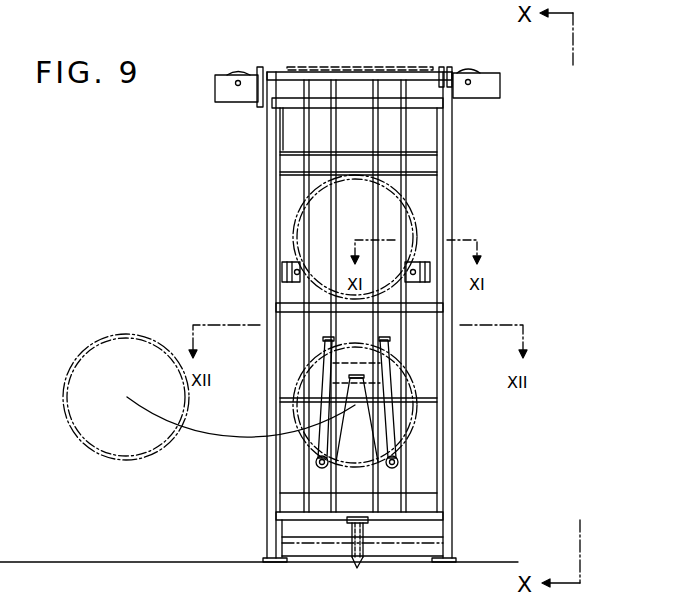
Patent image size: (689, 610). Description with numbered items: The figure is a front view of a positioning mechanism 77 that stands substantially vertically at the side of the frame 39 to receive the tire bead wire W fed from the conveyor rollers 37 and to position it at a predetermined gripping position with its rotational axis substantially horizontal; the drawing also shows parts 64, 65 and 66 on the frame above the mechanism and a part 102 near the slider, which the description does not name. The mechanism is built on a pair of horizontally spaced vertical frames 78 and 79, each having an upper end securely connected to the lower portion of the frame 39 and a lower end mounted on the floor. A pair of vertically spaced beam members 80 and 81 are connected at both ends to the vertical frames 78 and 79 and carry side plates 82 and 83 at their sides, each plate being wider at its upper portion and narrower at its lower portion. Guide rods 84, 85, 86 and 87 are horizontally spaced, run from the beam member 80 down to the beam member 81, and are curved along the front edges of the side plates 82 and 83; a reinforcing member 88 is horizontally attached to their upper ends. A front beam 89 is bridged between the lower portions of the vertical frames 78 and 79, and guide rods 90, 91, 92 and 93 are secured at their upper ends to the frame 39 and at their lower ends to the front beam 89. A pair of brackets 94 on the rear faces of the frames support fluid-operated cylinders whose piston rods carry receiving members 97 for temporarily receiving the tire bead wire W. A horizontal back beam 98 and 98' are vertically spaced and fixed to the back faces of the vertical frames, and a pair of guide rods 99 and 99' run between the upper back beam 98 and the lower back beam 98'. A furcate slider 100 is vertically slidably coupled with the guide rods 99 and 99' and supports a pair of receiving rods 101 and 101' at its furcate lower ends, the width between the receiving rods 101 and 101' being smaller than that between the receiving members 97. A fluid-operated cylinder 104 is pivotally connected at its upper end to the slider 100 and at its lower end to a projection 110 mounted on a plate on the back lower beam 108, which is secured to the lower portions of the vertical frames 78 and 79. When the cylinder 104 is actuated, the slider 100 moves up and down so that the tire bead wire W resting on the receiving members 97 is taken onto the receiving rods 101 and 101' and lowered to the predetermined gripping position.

The conveyor rollers 37 is at (470, 72).
The frame 39 is at (500, 90).
The stop plate 64 is at (440, 68).
The stop plate 65 is at (454, 72).
The stop plate 66 is at (274, 47).
The positioning mechanism 77 is at (258, 220).
The vertical frame 78 is at (444, 430).
The vertical frame 79 is at (278, 470).
The beam member 80 is at (418, 102).
The beam member 81 is at (427, 312).
The side plate 82 is at (423, 140).
The side plate 83 is at (283, 128).
The guide rod 84 is at (403, 85).
The guide rod 85 is at (376, 86).
The guide rod 86 is at (334, 82).
The guide rod 87 is at (310, 82).
The reinforcing member 88 is at (362, 77).
The front beam 89 is at (425, 517).
The guide rod 90 is at (413, 498).
The guide rod 91 is at (381, 515).
The guide rod 92 is at (333, 515).
The guide rod 93 is at (307, 492).
The bracket 94 is at (282, 272).
The receiving member 97 is at (293, 267).
The horizontal back beam 98 is at (381, 168).
The horizontal back beam 98' is at (384, 393).
The guide rod 99 is at (343, 385).
The guide rod 99' is at (409, 394).
The furcate slider 100 is at (395, 368).
The receiving rod 101 is at (333, 480).
The receiving rod 101' is at (443, 464).
The clamp jaw 102 is at (352, 397).
The fluid-operated cylinder 104 is at (407, 483).
The back lower beam 108 is at (398, 550).
The projection 110 is at (364, 560).
The tire bead wire W is at (300, 192).